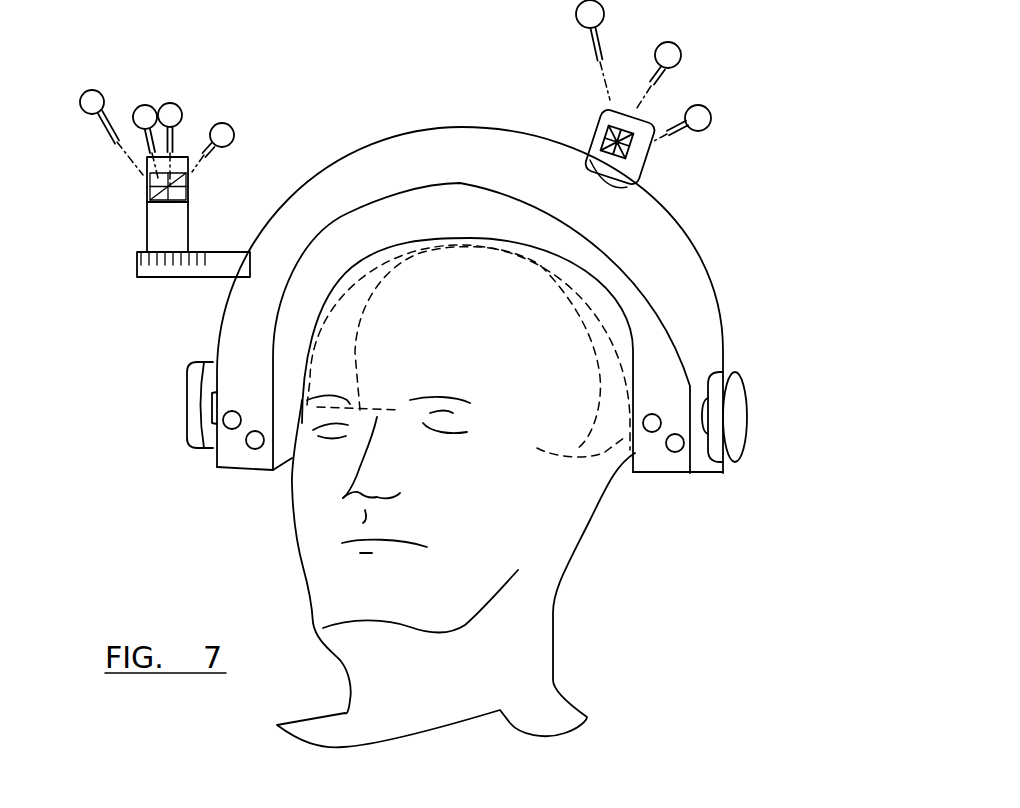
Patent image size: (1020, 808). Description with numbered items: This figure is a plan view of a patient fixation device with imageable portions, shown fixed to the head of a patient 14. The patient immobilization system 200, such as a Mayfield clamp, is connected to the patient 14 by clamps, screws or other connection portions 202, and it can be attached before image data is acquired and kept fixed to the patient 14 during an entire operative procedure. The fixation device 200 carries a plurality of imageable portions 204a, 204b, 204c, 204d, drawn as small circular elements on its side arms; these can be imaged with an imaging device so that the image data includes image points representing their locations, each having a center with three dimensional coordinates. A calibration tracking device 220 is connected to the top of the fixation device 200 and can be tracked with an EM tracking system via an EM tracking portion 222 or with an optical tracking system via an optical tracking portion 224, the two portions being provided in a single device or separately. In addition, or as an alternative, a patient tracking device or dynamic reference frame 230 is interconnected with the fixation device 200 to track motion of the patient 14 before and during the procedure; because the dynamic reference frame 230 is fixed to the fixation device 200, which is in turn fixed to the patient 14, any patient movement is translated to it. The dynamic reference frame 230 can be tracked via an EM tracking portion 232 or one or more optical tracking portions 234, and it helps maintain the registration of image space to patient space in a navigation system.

The patient 14 is at (646, 646).
The patient immobilization system 200 is at (183, 297).
The connection portions 202 is at (735, 385).
The imageable portion 204a is at (223, 420).
The imageable portion 204b is at (255, 449).
The imageable portion 204c is at (652, 432).
The imageable portion 204d is at (684, 443).
The calibration tracking device 220 is at (642, 102).
The EM tracking portion 222 is at (643, 163).
The optical tracking portion 224 is at (683, 52).
The dynamic reference frame 230 is at (186, 192).
The EM tracking portion 232 is at (143, 192).
The optical tracking portions 234 is at (235, 133).